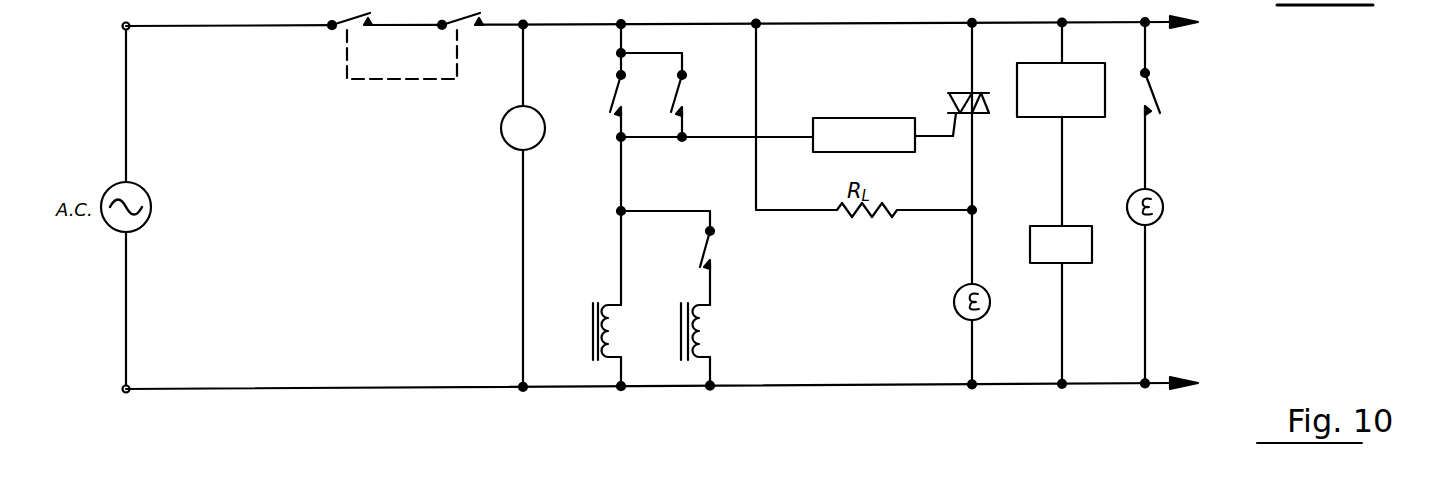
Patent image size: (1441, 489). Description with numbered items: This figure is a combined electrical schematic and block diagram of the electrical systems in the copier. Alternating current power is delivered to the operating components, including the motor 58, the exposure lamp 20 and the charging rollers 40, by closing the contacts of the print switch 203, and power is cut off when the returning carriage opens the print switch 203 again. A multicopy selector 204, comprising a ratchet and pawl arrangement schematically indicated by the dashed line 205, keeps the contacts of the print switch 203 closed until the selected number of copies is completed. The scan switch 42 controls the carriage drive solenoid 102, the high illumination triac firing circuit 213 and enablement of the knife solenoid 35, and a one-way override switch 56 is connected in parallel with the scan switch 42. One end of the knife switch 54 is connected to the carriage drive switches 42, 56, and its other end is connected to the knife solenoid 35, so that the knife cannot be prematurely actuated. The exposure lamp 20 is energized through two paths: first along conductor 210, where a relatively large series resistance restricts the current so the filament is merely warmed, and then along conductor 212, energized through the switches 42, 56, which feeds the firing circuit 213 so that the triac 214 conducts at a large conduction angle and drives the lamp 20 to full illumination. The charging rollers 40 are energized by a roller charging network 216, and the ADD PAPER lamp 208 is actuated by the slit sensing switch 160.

The print switch 203 is at (350, 30).
The multicopy selector 204 is at (467, 30).
The dashed line 205 is at (403, 80).
The motor 58 is at (523, 128).
The scan switch 42 is at (612, 93).
The one-way override switch 56 is at (690, 85).
The conductor 212 is at (704, 131).
The conductor 210 is at (760, 90).
The triac 214 is at (956, 90).
The high illumination triac firing circuit 213 is at (864, 135).
The roller charging network 216 is at (1061, 90).
The slit sensing switch 160 is at (1157, 83).
The ADD PAPER lamp 208 is at (1160, 216).
The charging rollers 40 is at (1061, 244).
The exposure lamp 20 is at (988, 310).
The knife switch 54 is at (717, 250).
The knife solenoid 35 is at (708, 315).
The carriage drive solenoid 102 is at (583, 330).